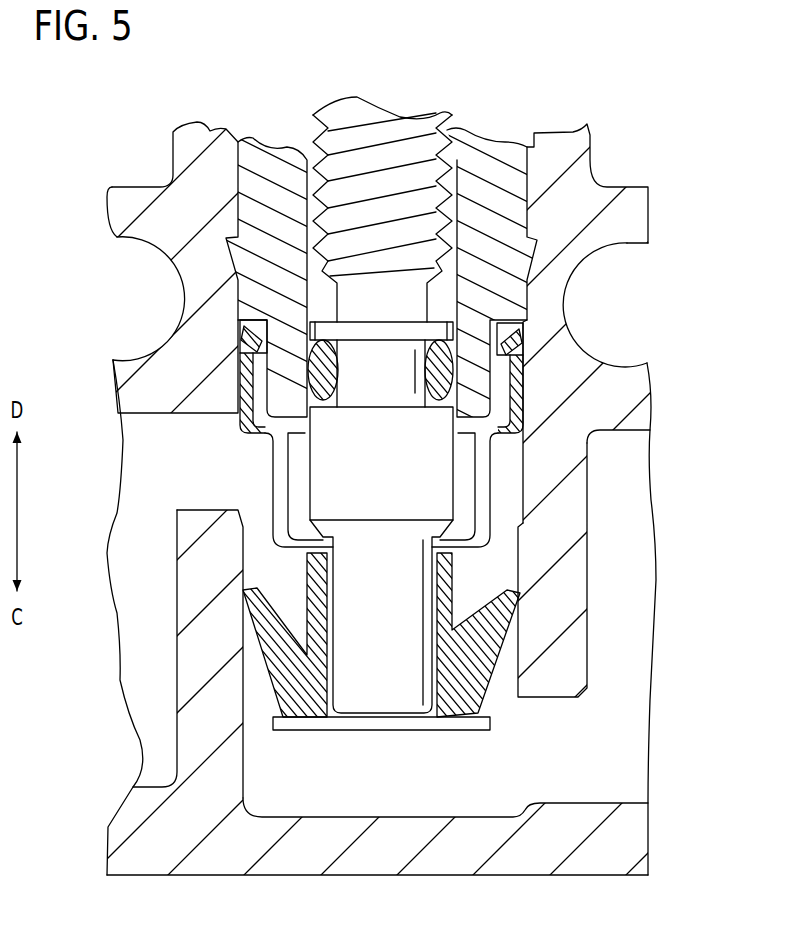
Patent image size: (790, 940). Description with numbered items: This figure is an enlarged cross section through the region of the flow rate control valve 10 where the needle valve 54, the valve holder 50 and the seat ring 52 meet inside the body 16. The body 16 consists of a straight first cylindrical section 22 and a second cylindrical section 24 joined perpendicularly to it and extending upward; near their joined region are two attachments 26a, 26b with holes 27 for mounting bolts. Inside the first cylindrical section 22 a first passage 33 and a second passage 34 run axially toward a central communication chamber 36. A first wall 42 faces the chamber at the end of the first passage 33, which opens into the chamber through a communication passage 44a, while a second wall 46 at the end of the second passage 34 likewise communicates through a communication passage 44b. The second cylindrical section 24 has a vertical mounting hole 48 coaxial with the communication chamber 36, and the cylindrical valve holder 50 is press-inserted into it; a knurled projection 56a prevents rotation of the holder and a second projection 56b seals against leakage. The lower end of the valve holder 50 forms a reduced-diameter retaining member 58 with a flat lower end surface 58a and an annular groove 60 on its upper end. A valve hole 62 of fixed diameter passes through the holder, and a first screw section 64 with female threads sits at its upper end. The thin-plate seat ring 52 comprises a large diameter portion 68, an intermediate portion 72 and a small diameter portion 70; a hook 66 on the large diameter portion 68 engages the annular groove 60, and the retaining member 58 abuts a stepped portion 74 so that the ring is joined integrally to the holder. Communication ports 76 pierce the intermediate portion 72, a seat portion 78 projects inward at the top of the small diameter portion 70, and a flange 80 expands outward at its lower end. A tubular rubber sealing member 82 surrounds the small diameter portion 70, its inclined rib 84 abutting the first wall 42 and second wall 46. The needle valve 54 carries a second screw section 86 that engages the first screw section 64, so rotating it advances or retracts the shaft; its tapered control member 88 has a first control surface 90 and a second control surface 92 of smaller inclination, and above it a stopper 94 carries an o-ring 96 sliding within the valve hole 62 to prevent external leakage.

The flow rate control valve 10 is at (638, 58).
The body 16 is at (599, 157).
The first cylindrical section 22 is at (587, 853).
The second cylindrical section 24 is at (180, 142).
The attachment 26a is at (130, 213).
The attachment 26b is at (637, 213).
The hole 27 is at (143, 252).
The first passage 33 is at (147, 682).
The second passage 34 is at (640, 747).
The communication chamber 36 is at (457, 805).
The first wall 42 is at (187, 613).
The communication passage 44a is at (190, 510).
The communication passage 44b is at (573, 700).
The second wall 46 is at (570, 523).
The mounting hole 48 is at (520, 302).
The valve holder 50 is at (475, 121).
The seat ring 52 is at (476, 739).
The needle valve 54 is at (342, 91).
The projection 56a is at (530, 153).
The projection 56b is at (533, 243).
The retaining member 58 is at (580, 390).
The lower end surface 58a is at (293, 430).
The annular groove 60 is at (240, 340).
The valve hole 62 is at (322, 210).
The first screw section 64 is at (430, 162).
The hook 66 is at (243, 343).
The large diameter portion 68 is at (240, 383).
The small diameter portion 70 is at (297, 650).
The intermediate portion 72 is at (267, 547).
The stepped portion 74 is at (247, 433).
The communication port 76 is at (277, 472).
The seat portion 78 is at (423, 547).
The flange 80 is at (293, 730).
The sealing member 82 is at (487, 705).
The rib 84 is at (507, 607).
The second screw section 86 is at (380, 114).
The control member 88 is at (414, 720).
The first control surface 90 is at (385, 697).
The second control surface 92 is at (247, 600).
The stopper 94 is at (403, 457).
The o-ring 96 is at (447, 363).